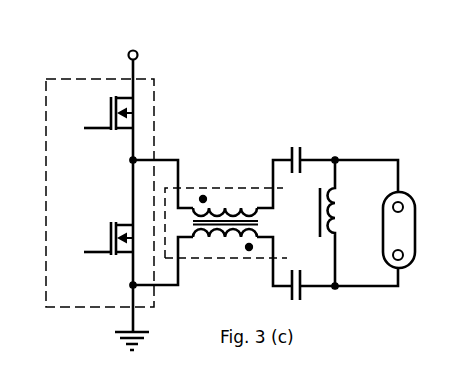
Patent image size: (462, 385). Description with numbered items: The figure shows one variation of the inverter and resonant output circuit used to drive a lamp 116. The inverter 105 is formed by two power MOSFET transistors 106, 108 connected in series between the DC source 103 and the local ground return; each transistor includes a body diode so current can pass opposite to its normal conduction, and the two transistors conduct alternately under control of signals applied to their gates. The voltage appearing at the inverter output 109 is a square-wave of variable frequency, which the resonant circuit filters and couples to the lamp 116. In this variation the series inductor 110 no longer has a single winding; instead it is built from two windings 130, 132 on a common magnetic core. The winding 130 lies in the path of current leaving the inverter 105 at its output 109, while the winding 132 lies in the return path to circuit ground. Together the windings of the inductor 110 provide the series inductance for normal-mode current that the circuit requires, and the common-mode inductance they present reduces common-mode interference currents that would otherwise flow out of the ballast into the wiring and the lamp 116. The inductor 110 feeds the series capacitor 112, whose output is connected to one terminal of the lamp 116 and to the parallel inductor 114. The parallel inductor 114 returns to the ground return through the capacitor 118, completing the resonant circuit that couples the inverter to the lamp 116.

The DC source 103 is at (138, 60).
The inverter 105 is at (156, 137).
The power MOSFET transistor 106 is at (108, 123).
The power MOSFET transistor 108 is at (108, 247).
The inverter output 109 is at (168, 186).
The winding 130 is at (213, 205).
The winding 132 is at (212, 241).
The series inductor 110 is at (264, 252).
The series capacitor 112 is at (303, 152).
The parallel inductor 114 is at (337, 206).
The lamp 116 is at (416, 238).
The capacitor 118 is at (302, 290).